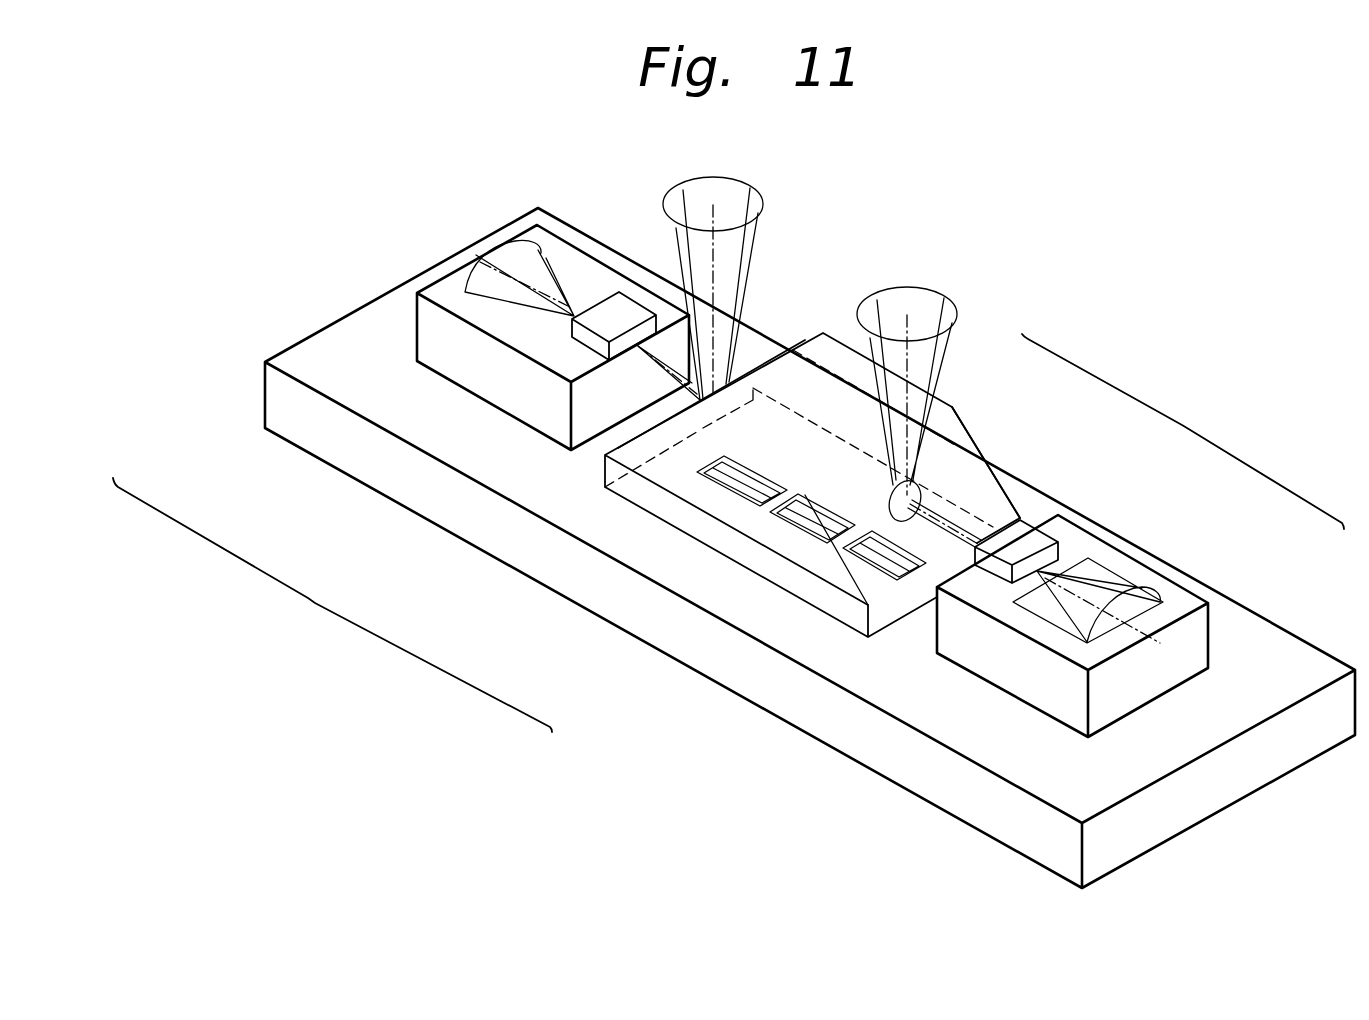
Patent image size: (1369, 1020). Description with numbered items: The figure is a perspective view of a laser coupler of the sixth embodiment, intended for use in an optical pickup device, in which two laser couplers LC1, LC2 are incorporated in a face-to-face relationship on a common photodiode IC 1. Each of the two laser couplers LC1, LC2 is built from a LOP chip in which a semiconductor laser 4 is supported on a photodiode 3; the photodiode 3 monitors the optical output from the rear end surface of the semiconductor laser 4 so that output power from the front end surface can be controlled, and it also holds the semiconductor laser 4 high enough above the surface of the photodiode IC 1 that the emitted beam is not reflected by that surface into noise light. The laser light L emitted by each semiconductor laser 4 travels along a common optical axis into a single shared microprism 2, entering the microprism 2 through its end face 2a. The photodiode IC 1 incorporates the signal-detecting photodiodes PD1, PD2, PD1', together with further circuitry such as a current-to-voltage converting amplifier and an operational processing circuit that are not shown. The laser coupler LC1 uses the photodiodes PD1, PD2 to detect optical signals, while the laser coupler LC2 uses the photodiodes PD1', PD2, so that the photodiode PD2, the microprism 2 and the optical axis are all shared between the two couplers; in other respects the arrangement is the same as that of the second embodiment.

The photodiode IC 1 is at (825, 717).
The microprism 2 is at (660, 478).
The light incident end face of waveguide element 2a is at (747, 373).
The photodiode 3 is at (497, 327).
The semiconductor laser 4 is at (605, 303).
The laser light L is at (667, 373).
The photodiode PD1 is at (773, 643).
The photodiode PD2 is at (804, 517).
The photodiode PD1' is at (619, 561).
The laser coupler LC1 is at (1192, 423).
The laser coupler LC2 is at (310, 603).